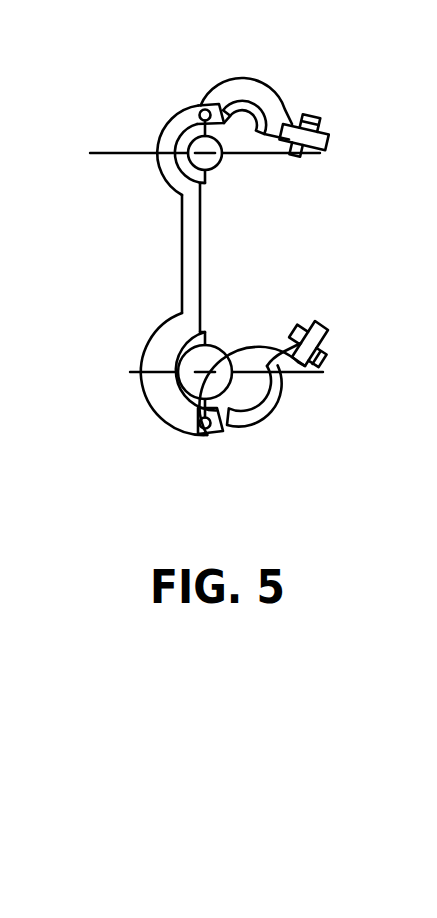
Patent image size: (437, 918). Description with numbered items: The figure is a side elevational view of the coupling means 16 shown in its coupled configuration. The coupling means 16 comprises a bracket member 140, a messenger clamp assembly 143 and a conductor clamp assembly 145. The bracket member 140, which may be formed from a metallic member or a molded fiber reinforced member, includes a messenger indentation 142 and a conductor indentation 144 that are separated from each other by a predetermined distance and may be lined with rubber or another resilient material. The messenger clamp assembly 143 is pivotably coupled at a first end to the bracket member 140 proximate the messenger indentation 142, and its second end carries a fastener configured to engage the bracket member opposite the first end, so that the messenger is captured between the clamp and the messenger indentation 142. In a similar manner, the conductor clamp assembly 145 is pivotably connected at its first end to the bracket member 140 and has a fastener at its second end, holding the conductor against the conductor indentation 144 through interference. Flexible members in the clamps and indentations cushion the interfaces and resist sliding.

The coupling means 16 is at (118, 227).
The bracket member 140 is at (132, 268).
The messenger indentation 142 is at (158, 134).
The messenger clamp assembly 143 is at (280, 96).
The conductor indentation 144 is at (176, 394).
The conductor clamp assembly 145 is at (313, 414).